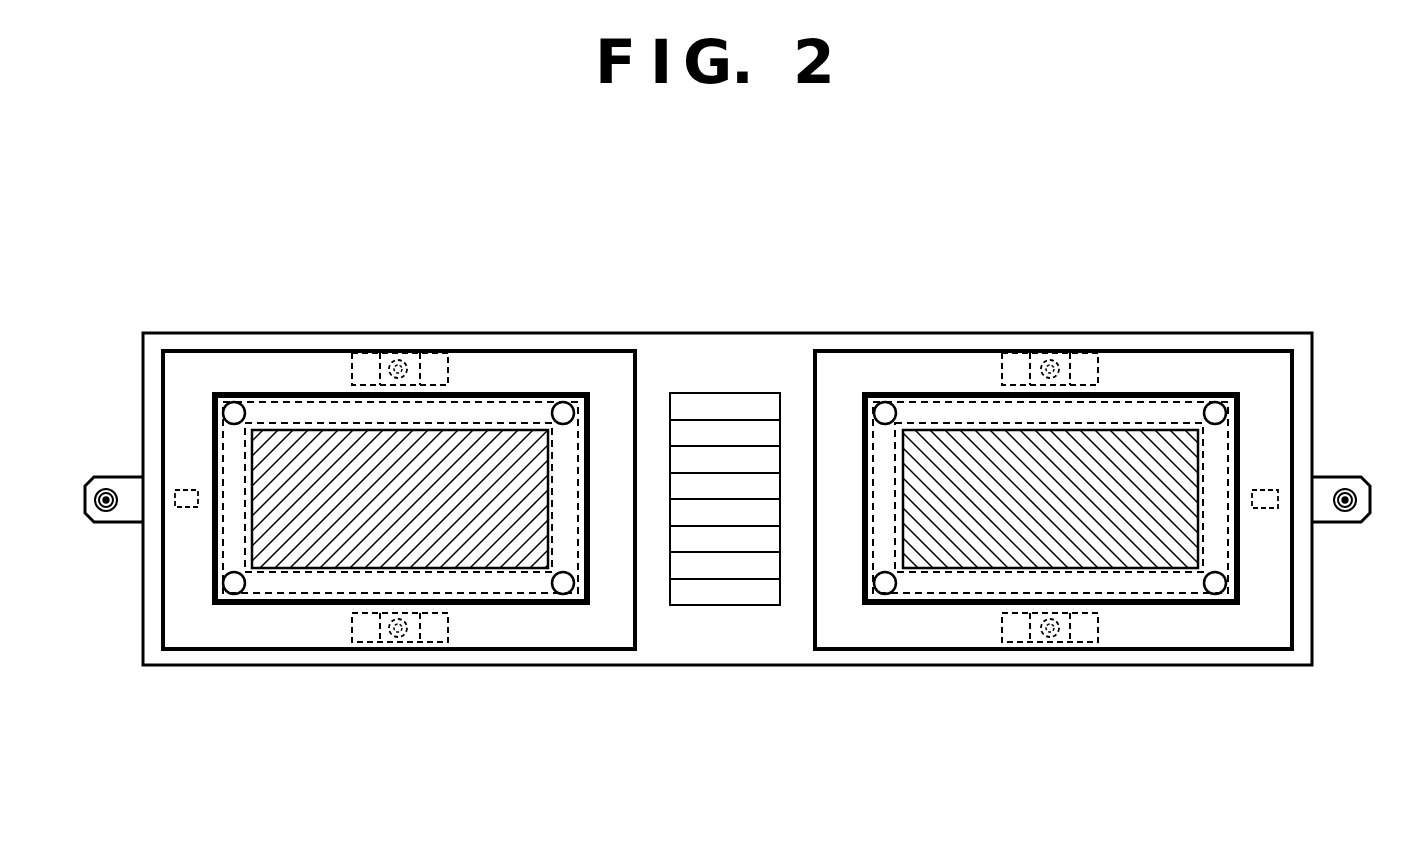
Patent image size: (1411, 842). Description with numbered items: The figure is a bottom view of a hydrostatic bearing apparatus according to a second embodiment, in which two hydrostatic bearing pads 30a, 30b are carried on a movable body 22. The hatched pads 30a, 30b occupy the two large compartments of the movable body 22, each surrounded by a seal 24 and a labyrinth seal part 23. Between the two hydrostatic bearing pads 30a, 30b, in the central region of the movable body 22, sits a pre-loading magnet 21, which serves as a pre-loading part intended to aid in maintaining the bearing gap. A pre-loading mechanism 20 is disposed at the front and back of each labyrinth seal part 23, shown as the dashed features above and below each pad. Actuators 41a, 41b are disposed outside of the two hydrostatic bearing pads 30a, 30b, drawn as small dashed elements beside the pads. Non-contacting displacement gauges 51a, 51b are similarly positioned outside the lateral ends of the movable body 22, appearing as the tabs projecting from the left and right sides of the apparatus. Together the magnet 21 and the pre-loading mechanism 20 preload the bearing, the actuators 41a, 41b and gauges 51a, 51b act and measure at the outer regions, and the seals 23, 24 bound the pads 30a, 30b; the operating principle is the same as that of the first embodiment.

The pre-loading mechanism 20 is at (1008, 355).
The pre-loading magnet 21 is at (760, 410).
The movable body 22 is at (668, 373).
The labyrinth seal part 23 is at (500, 373).
The seal 24 is at (268, 392).
The hydrostatic bearing pad 30a is at (970, 550).
The hydrostatic bearing pad 30b is at (492, 542).
The actuator 41a is at (1265, 508).
The actuator 41b is at (188, 508).
The non-contacting displacement gauge 51a is at (1352, 508).
The non-contacting displacement gauge 51b is at (97, 506).